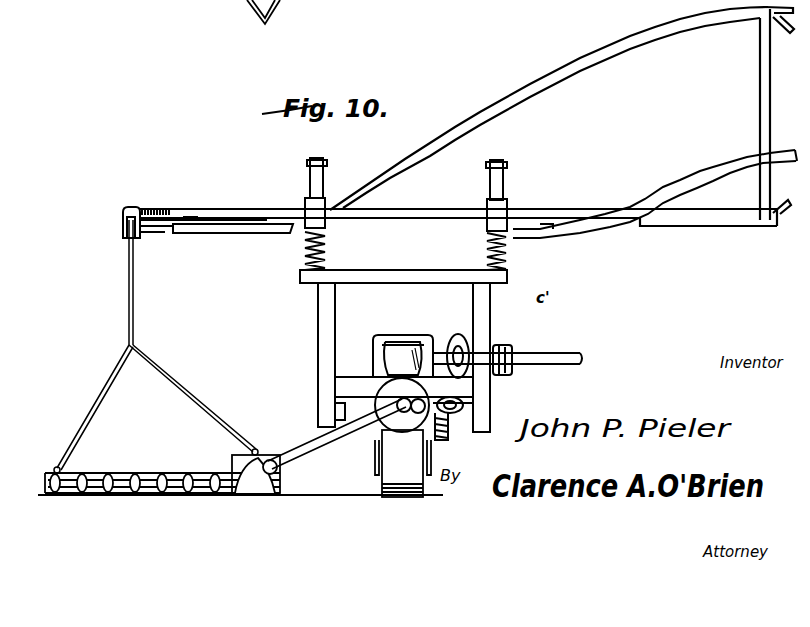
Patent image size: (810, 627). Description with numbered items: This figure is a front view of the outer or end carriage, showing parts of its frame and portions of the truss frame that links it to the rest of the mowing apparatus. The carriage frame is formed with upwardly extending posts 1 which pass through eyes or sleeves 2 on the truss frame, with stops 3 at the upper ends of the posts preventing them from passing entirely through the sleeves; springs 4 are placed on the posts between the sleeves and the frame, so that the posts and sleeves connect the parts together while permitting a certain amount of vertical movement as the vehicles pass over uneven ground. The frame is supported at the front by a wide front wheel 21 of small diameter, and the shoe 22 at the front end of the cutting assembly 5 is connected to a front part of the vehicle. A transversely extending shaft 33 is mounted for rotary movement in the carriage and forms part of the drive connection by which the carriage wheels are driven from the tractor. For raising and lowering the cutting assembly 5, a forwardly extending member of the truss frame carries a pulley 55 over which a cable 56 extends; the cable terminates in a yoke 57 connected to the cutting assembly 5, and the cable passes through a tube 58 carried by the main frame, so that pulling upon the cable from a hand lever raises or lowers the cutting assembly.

The post 1 is at (500, 186).
The sleeve 2 is at (503, 213).
The stop 3 is at (503, 166).
The spring 4 is at (323, 256).
The cutting assembly 5 is at (160, 495).
The front wheel 21 is at (405, 482).
The shoe 22 is at (268, 480).
The shaft 33 is at (320, 410).
The pulley 55 is at (141, 239).
The cable 56 is at (133, 308).
The yoke 57 is at (187, 389).
The tube 58 is at (265, 235).